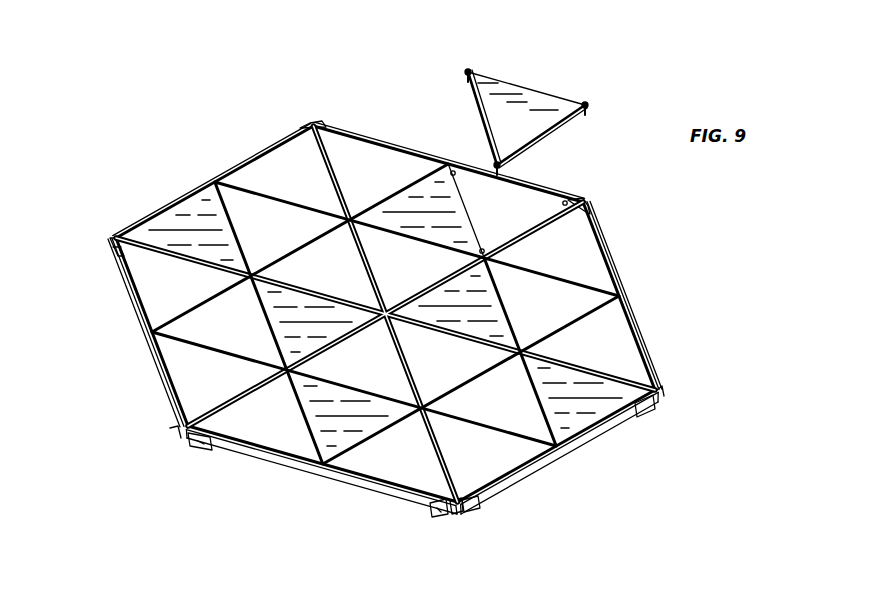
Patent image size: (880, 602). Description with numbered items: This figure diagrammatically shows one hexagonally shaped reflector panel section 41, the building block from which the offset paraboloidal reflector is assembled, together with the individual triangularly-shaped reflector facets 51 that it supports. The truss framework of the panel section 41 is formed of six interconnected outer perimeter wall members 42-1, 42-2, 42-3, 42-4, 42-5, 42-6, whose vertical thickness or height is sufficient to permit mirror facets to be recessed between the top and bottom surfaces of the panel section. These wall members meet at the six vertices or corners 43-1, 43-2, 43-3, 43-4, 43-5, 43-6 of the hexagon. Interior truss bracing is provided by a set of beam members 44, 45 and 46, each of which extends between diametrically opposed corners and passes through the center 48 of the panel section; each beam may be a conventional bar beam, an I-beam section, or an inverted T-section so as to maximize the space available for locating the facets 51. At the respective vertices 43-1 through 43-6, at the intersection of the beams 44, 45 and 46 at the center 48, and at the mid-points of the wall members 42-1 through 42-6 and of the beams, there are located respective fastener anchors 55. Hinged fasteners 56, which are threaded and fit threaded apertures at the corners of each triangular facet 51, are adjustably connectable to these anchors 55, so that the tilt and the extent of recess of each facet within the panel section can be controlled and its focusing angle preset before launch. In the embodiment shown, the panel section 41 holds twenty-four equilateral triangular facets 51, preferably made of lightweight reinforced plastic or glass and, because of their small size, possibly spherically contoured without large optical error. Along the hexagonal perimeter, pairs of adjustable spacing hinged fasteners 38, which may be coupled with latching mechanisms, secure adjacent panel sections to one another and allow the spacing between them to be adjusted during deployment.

The adjustable spacing hinged fasteners 38 is at (649, 424).
The hexagonally shaped reflector panel section 41 is at (612, 265).
The outer perimeter wall member 42-1 is at (636, 326).
The outer perimeter wall member 42-2 is at (400, 134).
The outer perimeter wall member 42-3 is at (198, 186).
The outer perimeter wall member 42-4 is at (152, 350).
The outer perimeter wall member 42-5 is at (303, 476).
The outer perimeter wall member 42-6 is at (548, 466).
The vertex 43-1 is at (585, 202).
The vertex 43-2 is at (313, 124).
The vertex 43-3 is at (118, 238).
The vertex 43-4 is at (188, 444).
The vertex 43-5 is at (458, 522).
The vertex 43-6 is at (662, 398).
The beam member 44 is at (338, 182).
The beam member 45 is at (232, 270).
The beam member 46 is at (318, 358).
The center 48 is at (388, 310).
The triangular-shaped facet 51 is at (530, 98).
The fastener anchor 55 is at (453, 170).
The hinged fasteners 56 is at (470, 72).